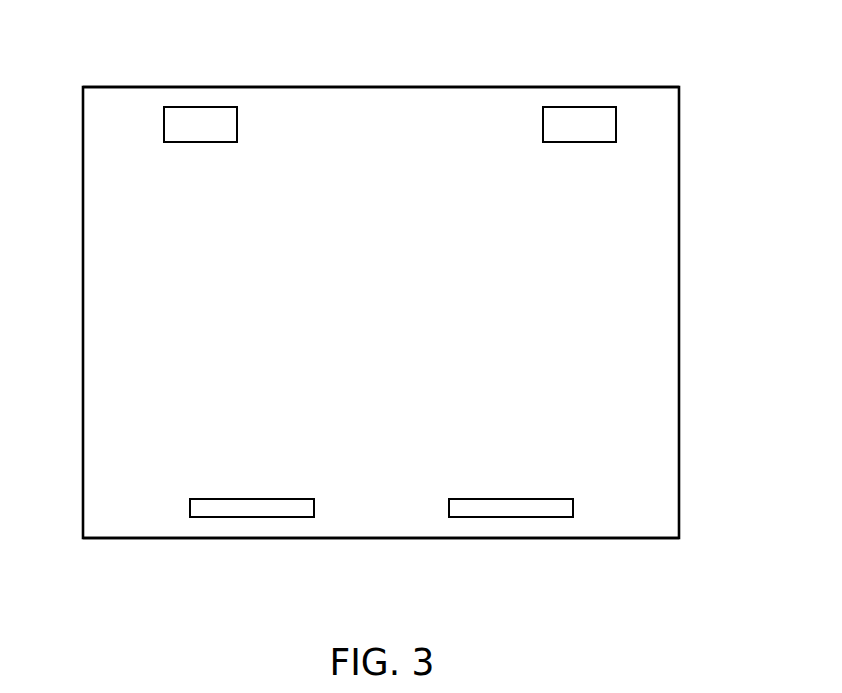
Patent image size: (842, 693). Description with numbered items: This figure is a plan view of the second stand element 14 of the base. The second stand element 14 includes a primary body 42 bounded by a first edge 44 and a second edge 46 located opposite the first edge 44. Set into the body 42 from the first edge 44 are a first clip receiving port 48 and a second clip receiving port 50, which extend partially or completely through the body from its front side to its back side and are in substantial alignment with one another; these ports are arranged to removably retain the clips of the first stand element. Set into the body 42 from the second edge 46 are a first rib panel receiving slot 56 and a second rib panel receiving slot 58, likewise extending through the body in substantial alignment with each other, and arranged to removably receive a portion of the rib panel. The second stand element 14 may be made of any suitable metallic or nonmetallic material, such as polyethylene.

The second stand element 14 is at (702, 55).
The primary body 42 is at (141, 302).
The first edge 44 is at (381, 538).
The second edge 46 is at (381, 87).
The first clip receiving port 48 is at (251, 517).
The second clip receiving port 50 is at (510, 517).
The first rib panel receiving slot 56 is at (202, 107).
The second rib panel receiving slot 58 is at (579, 107).